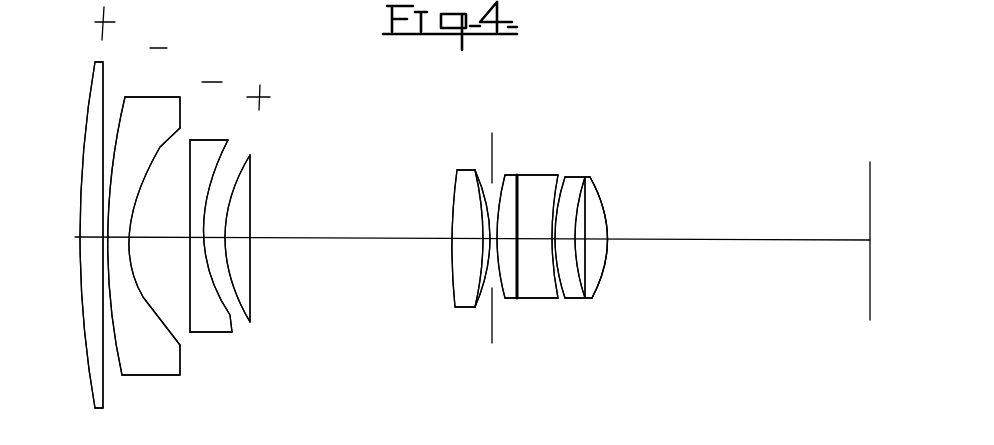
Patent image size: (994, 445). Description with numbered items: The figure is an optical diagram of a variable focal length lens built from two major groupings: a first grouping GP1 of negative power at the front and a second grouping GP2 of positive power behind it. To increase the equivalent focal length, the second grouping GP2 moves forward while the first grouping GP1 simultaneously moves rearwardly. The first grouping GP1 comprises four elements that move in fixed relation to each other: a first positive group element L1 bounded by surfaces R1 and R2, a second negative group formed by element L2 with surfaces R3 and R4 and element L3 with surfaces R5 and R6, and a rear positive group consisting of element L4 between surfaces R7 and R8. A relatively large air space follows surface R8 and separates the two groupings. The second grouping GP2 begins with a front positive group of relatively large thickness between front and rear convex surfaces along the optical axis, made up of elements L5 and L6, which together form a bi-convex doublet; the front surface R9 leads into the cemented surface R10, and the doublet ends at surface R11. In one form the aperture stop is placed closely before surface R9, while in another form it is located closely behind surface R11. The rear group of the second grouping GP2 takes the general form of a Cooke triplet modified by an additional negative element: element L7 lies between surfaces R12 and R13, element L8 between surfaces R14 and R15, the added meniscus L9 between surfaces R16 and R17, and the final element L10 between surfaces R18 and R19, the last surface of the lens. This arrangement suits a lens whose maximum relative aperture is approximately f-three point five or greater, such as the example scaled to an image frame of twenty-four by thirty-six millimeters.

The first positive group element L1 is at (100, 78).
The second negative group element L2 is at (148, 113).
The second negative group element L3 is at (212, 148).
The rear positive group element L4 is at (255, 158).
The front positive group element L5 is at (457, 190).
The front positive group element L6 is at (468, 170).
The rear group element L7 is at (507, 182).
The rear group element L8 is at (535, 183).
The meniscus L9 is at (577, 182).
The rear group element L10 is at (596, 198).
The surface R1 is at (91, 388).
The surface R2 is at (105, 390).
The surface R3 is at (118, 363).
The surface R4 is at (148, 300).
The surface R5 is at (190, 277).
The surface R6 is at (229, 332).
The surface R7 is at (246, 307).
The surface R8 is at (251, 277).
The surface R9 is at (452, 285).
The surface R10 is at (476, 255).
The surface R11 is at (479, 308).
The surface R12 is at (500, 288).
The surface R13 is at (518, 275).
The surface R14 is at (553, 300).
The surface R15 is at (556, 296).
The surface R16 is at (583, 273).
The surface R17 is at (577, 273).
The surface R18 is at (588, 262).
The surface R19 is at (608, 230).
The first grouping GP1 is at (236, 386).
The second grouping GP2 is at (566, 374).